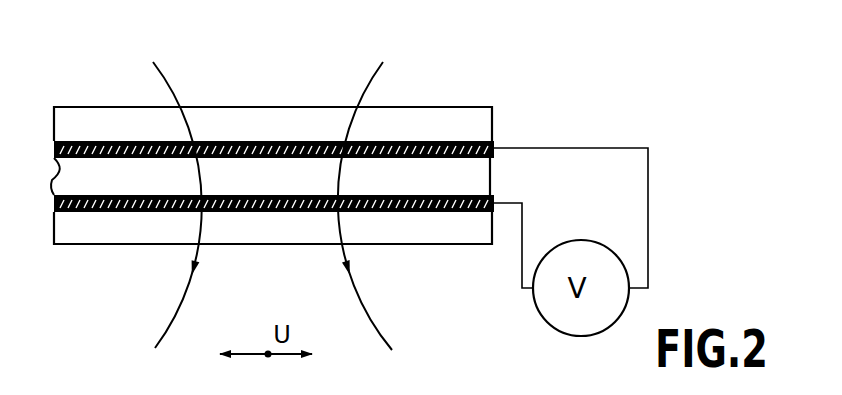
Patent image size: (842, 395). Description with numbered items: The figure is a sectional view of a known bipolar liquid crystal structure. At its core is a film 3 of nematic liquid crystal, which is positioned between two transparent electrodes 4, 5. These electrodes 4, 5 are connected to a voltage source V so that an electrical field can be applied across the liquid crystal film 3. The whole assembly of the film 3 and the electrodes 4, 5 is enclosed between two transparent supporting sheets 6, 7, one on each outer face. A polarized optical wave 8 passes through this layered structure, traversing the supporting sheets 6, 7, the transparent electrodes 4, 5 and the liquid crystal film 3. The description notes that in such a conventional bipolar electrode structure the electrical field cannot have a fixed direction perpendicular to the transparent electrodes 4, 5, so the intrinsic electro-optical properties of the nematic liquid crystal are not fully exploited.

The film of liquid crystal 3 is at (472, 178).
The transparent electrode 4 is at (493, 150).
The transparent electrode 5 is at (494, 203).
The transparent supporting sheet 6 is at (467, 114).
The transparent supporting sheet 7 is at (467, 233).
The polarized optical wave 8 is at (300, 88).